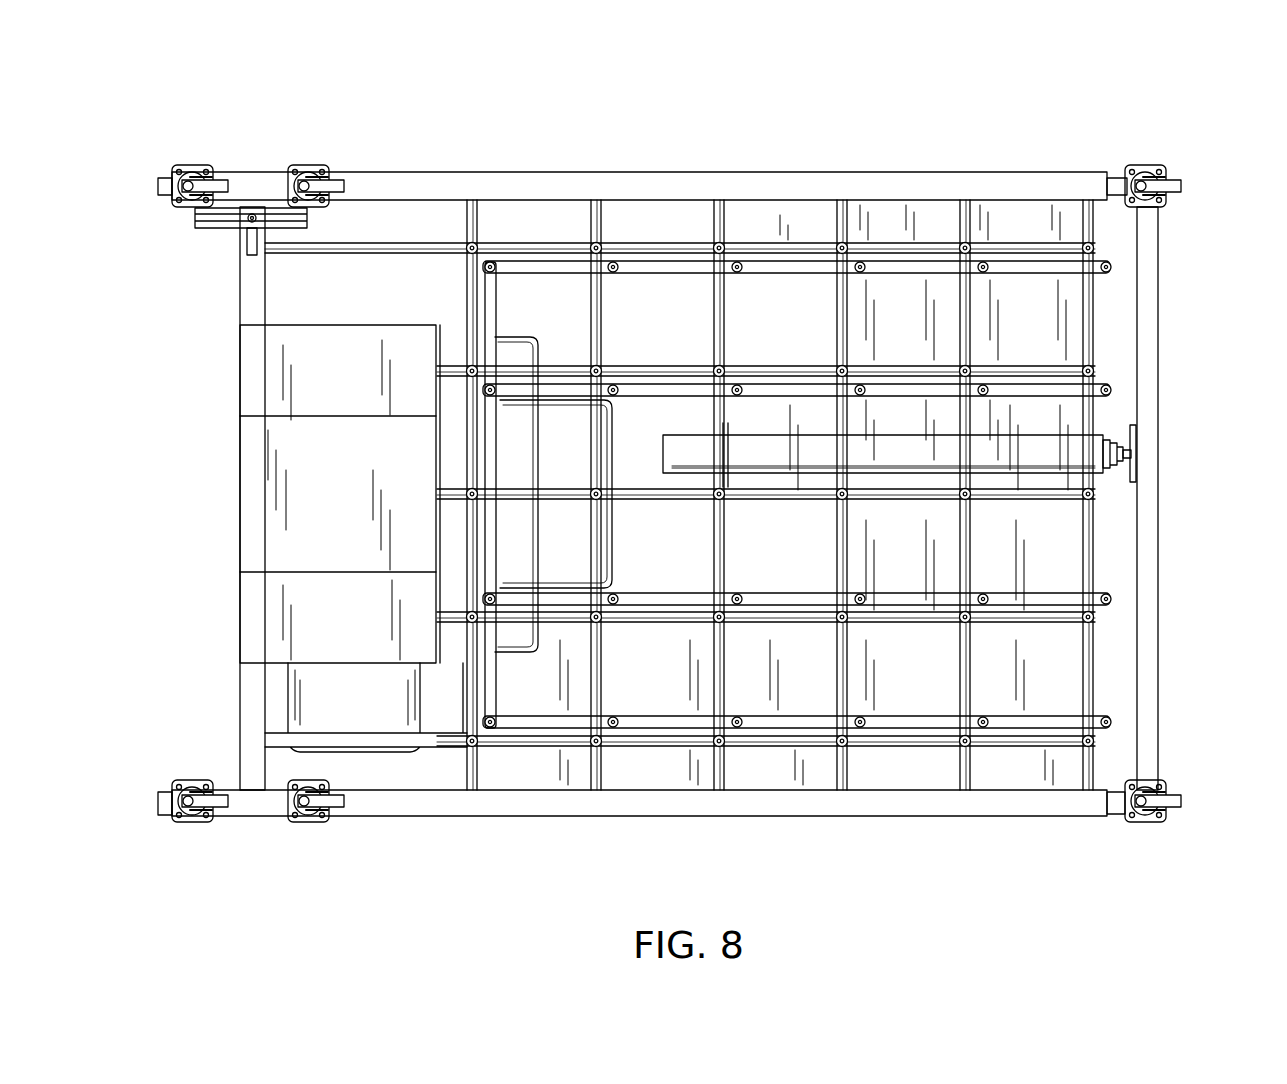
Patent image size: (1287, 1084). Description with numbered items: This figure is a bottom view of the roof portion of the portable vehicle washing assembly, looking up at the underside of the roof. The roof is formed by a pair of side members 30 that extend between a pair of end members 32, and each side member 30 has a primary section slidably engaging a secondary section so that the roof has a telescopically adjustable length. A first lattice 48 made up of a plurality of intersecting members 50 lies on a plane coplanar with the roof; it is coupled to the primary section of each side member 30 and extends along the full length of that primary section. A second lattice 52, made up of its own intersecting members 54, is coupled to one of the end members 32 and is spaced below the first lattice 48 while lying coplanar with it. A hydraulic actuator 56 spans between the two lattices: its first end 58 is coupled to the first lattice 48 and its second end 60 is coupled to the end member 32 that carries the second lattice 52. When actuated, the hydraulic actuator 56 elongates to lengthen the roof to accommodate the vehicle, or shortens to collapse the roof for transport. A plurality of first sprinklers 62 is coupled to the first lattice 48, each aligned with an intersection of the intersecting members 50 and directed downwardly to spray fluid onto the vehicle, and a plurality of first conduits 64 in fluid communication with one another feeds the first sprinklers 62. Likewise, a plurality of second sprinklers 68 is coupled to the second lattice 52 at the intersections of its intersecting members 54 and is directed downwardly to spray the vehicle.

The side members 30 is at (800, 176).
The end members 32 is at (240, 281).
The first lattice 48 is at (680, 479).
The intersecting members 50 is at (683, 243).
The second lattice 52 is at (867, 398).
The intersecting members 54 is at (515, 300).
The hydraulic actuator 56 is at (867, 483).
The first end 58 is at (683, 465).
The second end 60 is at (1136, 455).
The first sprinklers 62 is at (955, 237).
The first conduits 64 is at (477, 310).
The second sprinklers 68 is at (1105, 722).